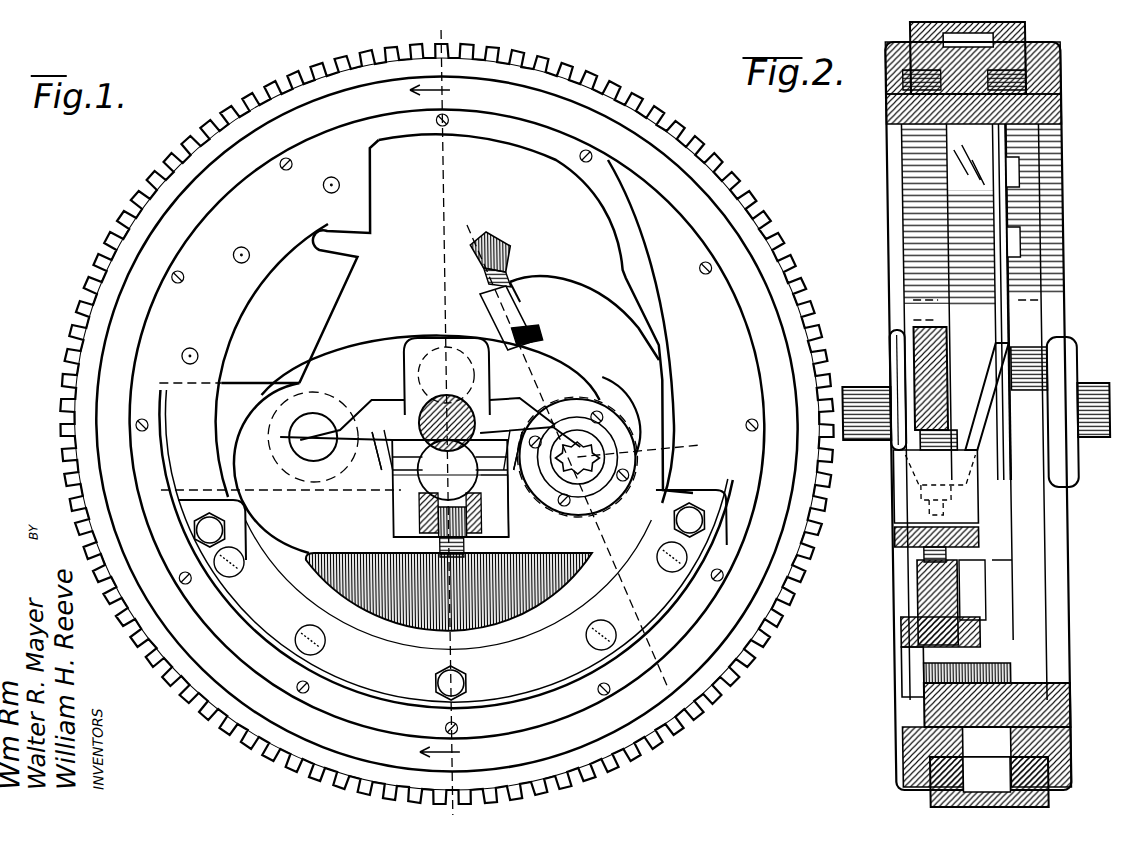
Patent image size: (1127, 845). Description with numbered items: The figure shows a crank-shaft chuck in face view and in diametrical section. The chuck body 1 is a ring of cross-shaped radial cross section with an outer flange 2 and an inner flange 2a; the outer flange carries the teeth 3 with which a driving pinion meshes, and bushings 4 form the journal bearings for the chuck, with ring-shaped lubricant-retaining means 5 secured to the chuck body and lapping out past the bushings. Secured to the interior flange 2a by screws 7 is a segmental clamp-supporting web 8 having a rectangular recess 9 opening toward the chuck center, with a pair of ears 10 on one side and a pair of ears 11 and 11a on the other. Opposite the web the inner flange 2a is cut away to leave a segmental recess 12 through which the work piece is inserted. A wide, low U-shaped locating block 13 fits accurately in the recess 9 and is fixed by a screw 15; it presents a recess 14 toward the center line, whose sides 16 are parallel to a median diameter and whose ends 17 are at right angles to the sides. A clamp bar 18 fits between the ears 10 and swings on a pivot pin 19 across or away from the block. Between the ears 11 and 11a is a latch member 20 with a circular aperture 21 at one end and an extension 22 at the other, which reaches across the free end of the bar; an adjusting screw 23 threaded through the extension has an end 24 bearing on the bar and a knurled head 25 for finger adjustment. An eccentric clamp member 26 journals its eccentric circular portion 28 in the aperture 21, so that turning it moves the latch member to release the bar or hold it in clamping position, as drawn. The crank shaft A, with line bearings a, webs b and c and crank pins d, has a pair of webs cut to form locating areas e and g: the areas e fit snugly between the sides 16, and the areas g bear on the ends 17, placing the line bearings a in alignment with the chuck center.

In FIG. 2, the chuck body 1 is at (1048, 700).
In FIG. 1, the outer flange 2 is at (446, 423).
In FIG. 2, the outer flange 2 is at (1040, 780).
In FIG. 1, the inner flange 2a is at (236, 303).
In FIG. 2, the inner flange 2a is at (1030, 650).
In FIG. 1, the teeth 3 is at (735, 705).
In FIG. 2, the teeth 3 is at (1031, 30).
In FIG. 2, the bushings 4 is at (900, 757).
In FIG. 2, the hub 5 is at (925, 795).
In FIG. 1, the screws 7 is at (205, 522).
In FIG. 2, the screws 7 is at (937, 672).
In FIG. 1, the web 8 is at (612, 556).
In FIG. 2, the web 8 is at (915, 592).
In FIG. 1, the rectangular recess 9 is at (392, 520).
In FIG. 1, the ears 10 is at (266, 410).
In FIG. 1, the ear 11 is at (577, 400).
In FIG. 1, the ear 11a is at (612, 404).
In FIG. 1, the segmental recess 12 is at (522, 160).
In FIG. 1, the locating block 13 is at (492, 520).
In FIG. 2, the locating block 13 is at (913, 494).
In FIG. 1, the recess 14 is at (418, 490).
In FIG. 1, the screw 15 is at (418, 520).
In FIG. 2, the screw 15 is at (960, 508).
In FIG. 1, the sides 16 is at (392, 476).
In FIG. 1, the ends 17 is at (446, 432).
In FIG. 1, the clamp bar 18 is at (372, 350).
In FIG. 2, the clamp bar 18 is at (948, 365).
In FIG. 1, the pivot pin 19 is at (305, 446).
In FIG. 1, the latch member 20 is at (560, 290).
In FIG. 1, the circular aperture 21 is at (701, 445).
In FIG. 1, the extension 22 is at (500, 312).
In FIG. 1, the adjusting screw 23 is at (512, 275).
In FIG. 1, the end 24 is at (542, 337).
In FIG. 1, the knurled head 25 is at (505, 247).
In FIG. 1, the eccentric clamp member 26 is at (600, 438).
In FIG. 1, the circular portion 28 is at (603, 468).
In FIG. 1, the crank shaft A is at (440, 350).
In FIG. 2, the crank shaft A is at (895, 340).
In FIG. 1, the line bearings a is at (405, 395).
In FIG. 2, the line bearings a is at (865, 440).
In FIG. 1, the web b is at (485, 388).
In FIG. 2, the web b is at (897, 360).
In FIG. 2, the web c is at (998, 418).
In FIG. 1, the crank pin d is at (495, 506).
In FIG. 2, the crank pin d is at (1035, 357).
In FIG. 1, the locating areas e is at (445, 459).
In FIG. 1, the locating areas g is at (447, 435).